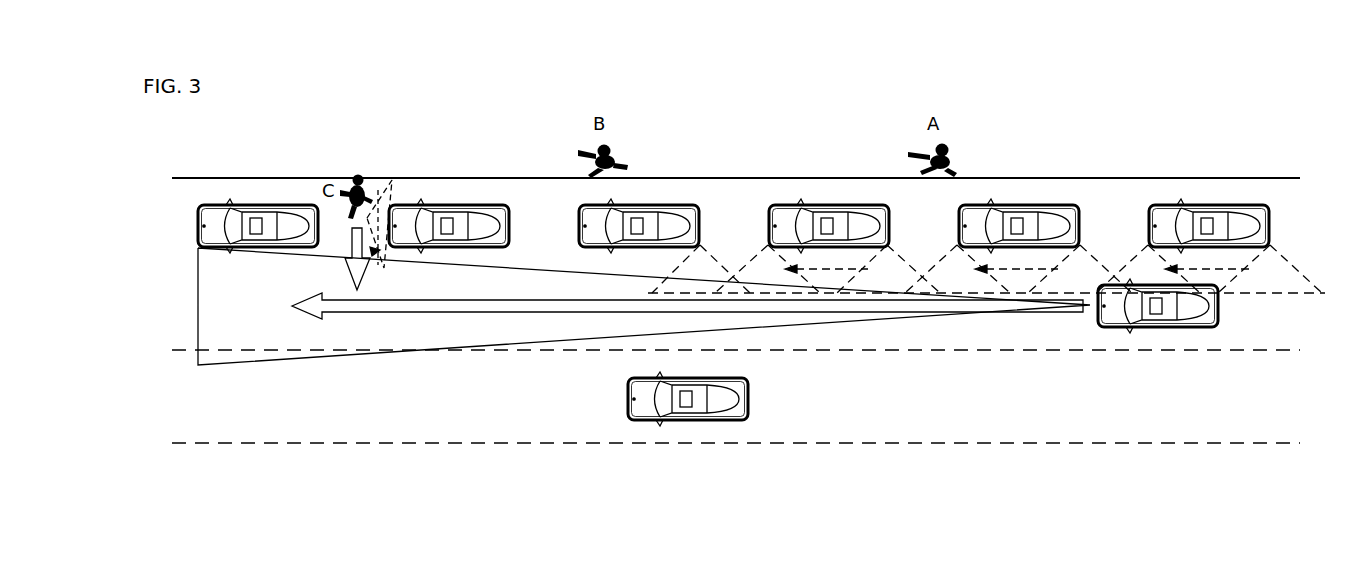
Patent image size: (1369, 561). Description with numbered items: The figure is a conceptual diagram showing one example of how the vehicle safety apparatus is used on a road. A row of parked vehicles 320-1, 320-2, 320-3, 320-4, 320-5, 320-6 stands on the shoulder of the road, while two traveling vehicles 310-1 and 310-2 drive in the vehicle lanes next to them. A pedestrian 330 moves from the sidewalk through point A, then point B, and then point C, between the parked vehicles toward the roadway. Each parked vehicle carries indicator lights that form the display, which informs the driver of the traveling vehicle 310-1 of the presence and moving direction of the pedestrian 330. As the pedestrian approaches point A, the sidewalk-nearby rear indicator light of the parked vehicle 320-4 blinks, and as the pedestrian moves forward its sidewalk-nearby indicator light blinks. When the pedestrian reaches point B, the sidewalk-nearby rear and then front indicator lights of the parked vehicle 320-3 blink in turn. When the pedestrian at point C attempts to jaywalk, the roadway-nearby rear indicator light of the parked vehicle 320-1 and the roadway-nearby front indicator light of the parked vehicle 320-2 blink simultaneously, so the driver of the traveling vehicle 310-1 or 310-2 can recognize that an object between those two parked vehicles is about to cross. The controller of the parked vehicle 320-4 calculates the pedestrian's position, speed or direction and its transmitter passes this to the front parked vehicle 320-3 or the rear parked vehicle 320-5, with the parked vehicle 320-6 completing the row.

The parked vehicle 320-1 is at (267, 205).
The parked vehicle 320-2 is at (458, 205).
The parked vehicle 320-3 is at (648, 205).
The parked vehicle 320-4 is at (838, 205).
The parked vehicle 320-5 is at (1028, 205).
The parked vehicle 320-6 is at (1218, 205).
The pedestrian 330 is at (357, 175).
The traveling vehicle 310-1 is at (1218, 311).
The traveling vehicle 310-2 is at (748, 397).